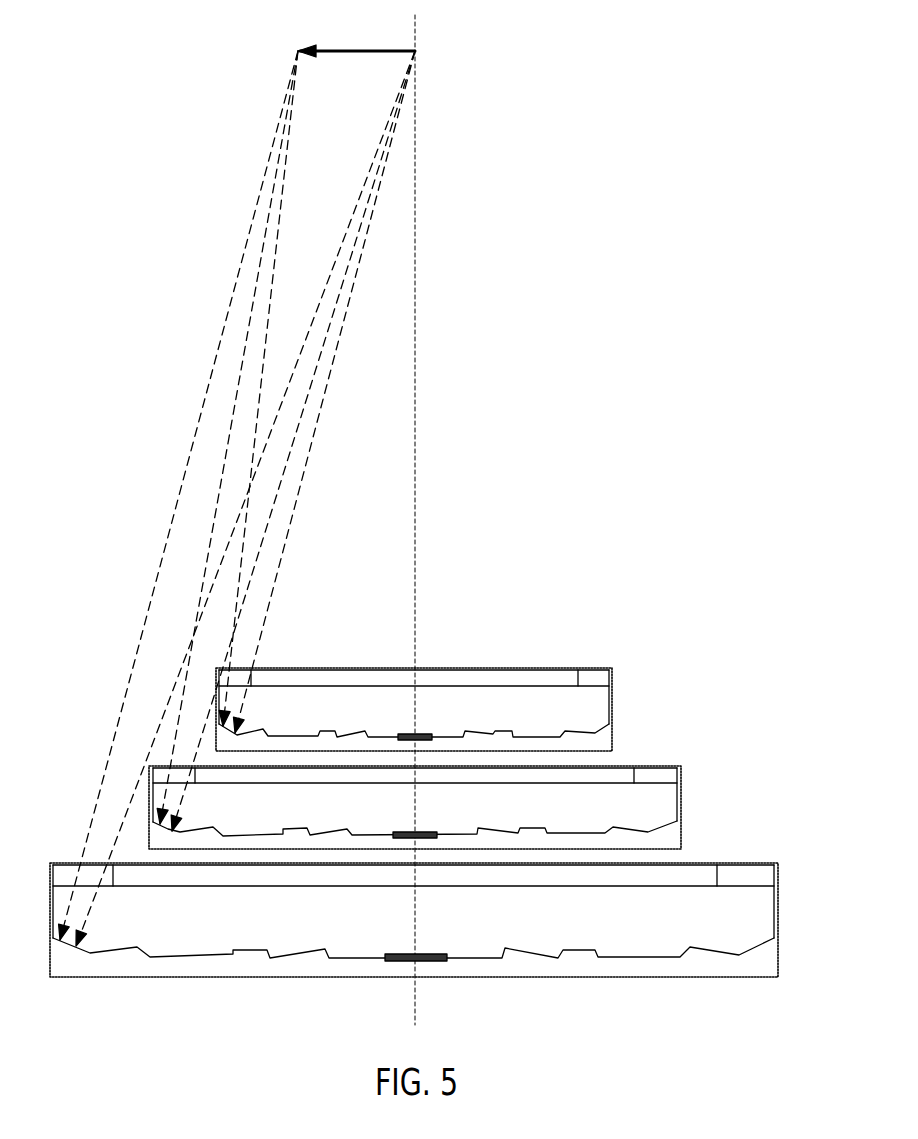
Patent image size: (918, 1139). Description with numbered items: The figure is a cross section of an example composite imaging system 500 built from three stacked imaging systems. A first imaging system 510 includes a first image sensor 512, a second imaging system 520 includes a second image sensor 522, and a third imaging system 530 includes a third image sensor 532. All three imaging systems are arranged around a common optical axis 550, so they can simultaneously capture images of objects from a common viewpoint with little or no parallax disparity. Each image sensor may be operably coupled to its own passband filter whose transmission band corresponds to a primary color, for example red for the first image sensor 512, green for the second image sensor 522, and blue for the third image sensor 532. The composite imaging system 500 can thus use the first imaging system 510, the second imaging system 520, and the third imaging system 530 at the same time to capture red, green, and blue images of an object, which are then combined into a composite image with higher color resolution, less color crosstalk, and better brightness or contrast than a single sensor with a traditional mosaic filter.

The composite imaging system 500 is at (616, 342).
The common optical axis 550 is at (415, 388).
The first imaging system 510 is at (769, 842).
The first image sensor 512 is at (398, 954).
The second imaging system 520 is at (669, 748).
The second image sensor 522 is at (405, 832).
The third imaging system 530 is at (623, 658).
The third image sensor 532 is at (412, 735).